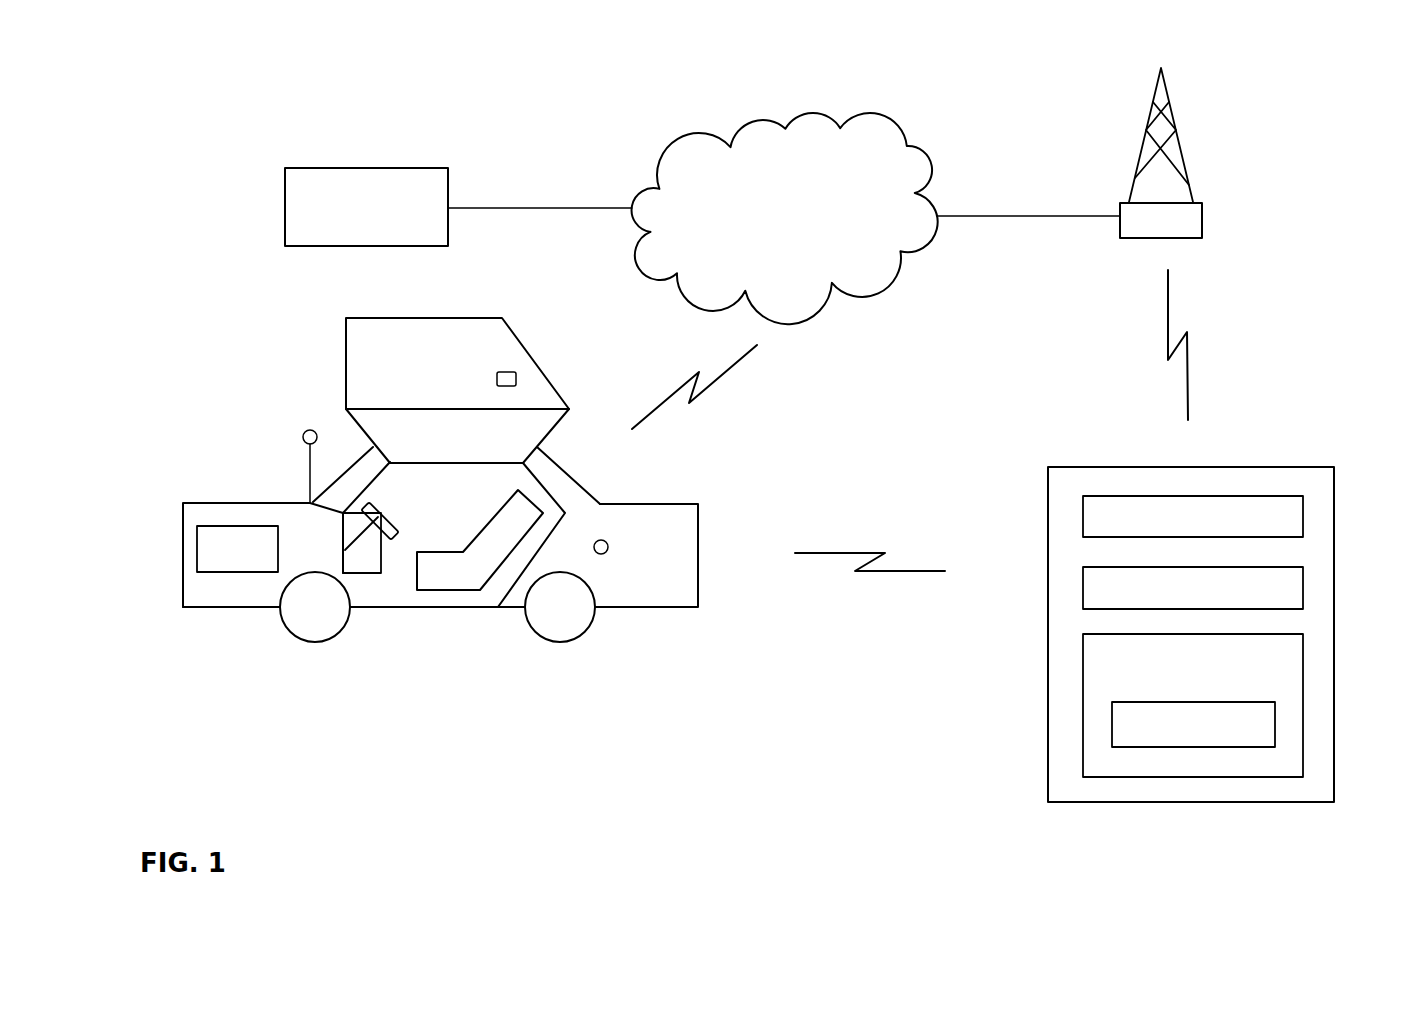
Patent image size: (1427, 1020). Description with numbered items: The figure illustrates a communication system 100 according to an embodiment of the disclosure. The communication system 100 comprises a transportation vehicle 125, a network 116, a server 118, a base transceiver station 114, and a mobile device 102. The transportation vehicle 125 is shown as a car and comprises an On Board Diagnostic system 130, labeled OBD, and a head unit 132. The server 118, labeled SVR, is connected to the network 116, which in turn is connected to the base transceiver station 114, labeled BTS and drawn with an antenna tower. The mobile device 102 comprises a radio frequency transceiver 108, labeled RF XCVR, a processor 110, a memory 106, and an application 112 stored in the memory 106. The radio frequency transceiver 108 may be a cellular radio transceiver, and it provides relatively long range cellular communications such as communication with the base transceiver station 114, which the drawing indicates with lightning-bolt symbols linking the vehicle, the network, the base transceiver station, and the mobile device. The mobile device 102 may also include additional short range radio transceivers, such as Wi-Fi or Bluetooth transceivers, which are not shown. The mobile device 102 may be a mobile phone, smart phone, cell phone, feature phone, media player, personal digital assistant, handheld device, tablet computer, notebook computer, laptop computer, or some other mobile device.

The communication system 100 is at (1320, 126).
The mobile device 102 is at (1190, 634).
The memory 106 is at (1303, 672).
The radio frequency transceiver 108 is at (1303, 517).
The processor 110 is at (1303, 588).
The application 112 is at (1275, 724).
The base transceiver station 114 is at (1202, 219).
The network 116 is at (686, 134).
The server 118 is at (285, 208).
The transportation vehicle 125 is at (405, 499).
The On Board Diagnostic system 130 is at (197, 549).
The head unit 132 is at (362, 573).